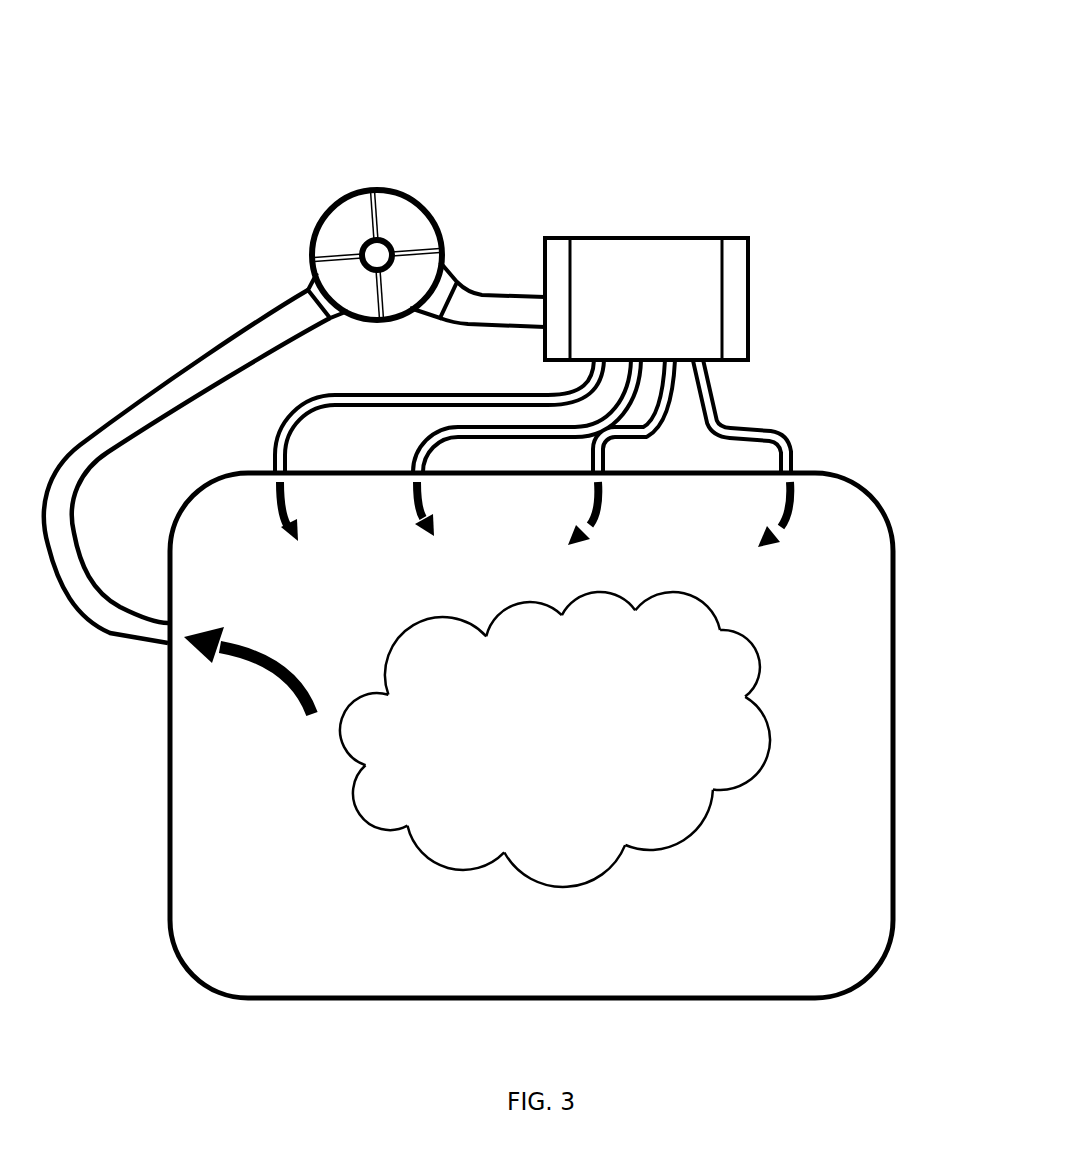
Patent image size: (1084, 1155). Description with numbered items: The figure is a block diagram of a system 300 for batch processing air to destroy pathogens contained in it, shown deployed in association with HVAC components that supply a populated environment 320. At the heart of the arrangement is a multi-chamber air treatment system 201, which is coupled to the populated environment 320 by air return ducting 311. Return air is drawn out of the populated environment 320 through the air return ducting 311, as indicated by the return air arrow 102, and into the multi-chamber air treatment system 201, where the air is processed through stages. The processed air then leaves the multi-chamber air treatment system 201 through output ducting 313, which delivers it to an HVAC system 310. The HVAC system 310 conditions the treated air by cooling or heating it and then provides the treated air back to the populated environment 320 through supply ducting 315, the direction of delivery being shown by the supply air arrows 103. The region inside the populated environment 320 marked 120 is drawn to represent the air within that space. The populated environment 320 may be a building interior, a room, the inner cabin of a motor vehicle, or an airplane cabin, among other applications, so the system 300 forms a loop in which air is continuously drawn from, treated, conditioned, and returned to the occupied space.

The system for batch processing air 300 is at (322, 64).
The multi-chamber air treatment system 201 is at (407, 195).
The HVAC system 310 is at (703, 245).
The output ducting 313 is at (480, 292).
The air return ducting 311 is at (193, 357).
The supply ducting 315 is at (363, 397).
The populated environment 320 is at (883, 540).
The supply air arrows 103 is at (581, 497).
The contaminated air 120 is at (598, 771).
The return air arrow 102 is at (233, 699).